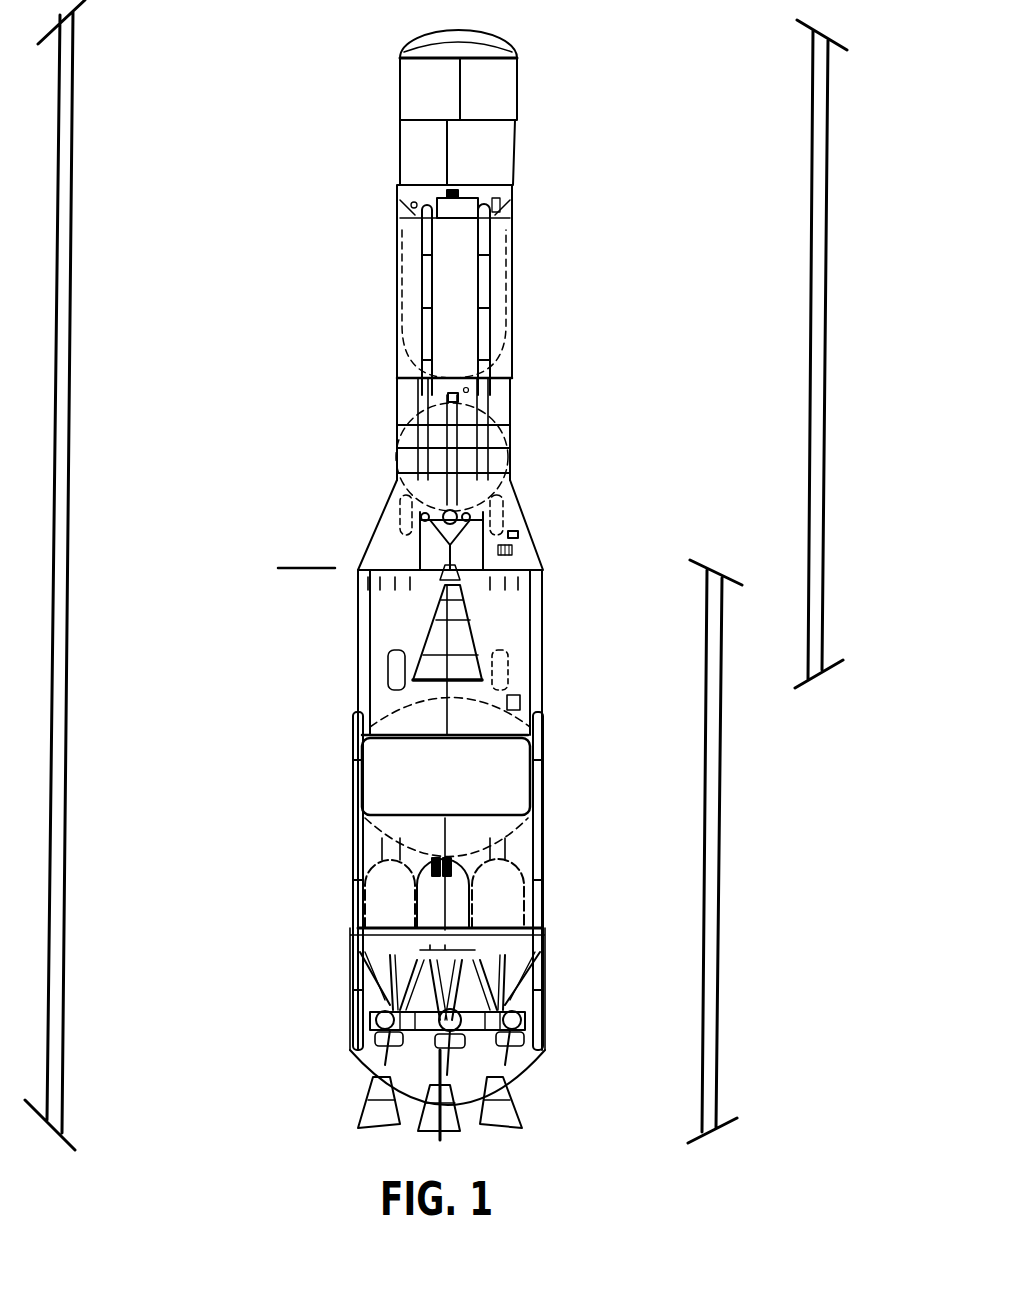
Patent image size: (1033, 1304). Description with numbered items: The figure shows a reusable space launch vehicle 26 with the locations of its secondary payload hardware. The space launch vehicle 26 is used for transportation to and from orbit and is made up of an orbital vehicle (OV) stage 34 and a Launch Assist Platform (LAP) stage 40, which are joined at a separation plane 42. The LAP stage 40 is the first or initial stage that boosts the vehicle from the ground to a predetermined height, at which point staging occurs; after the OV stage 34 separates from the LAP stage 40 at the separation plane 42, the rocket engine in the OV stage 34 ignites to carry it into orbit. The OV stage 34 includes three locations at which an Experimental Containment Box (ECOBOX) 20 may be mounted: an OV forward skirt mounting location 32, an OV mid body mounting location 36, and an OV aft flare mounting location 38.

The Experimental Containment Box (ECOBOX) 20 is at (512, 534).
The space launch vehicle 26 is at (77, 125).
The OV forward skirt mounting location 32 is at (460, 191).
The orbital vehicle (OV) stage 34 is at (833, 302).
The OV mid body mounting location 36 is at (465, 396).
The OV Aft Flare mounting location 38 is at (522, 543).
The Launch Assist Platform (LAP) stage 40 is at (720, 838).
The separation plane 42 is at (300, 567).